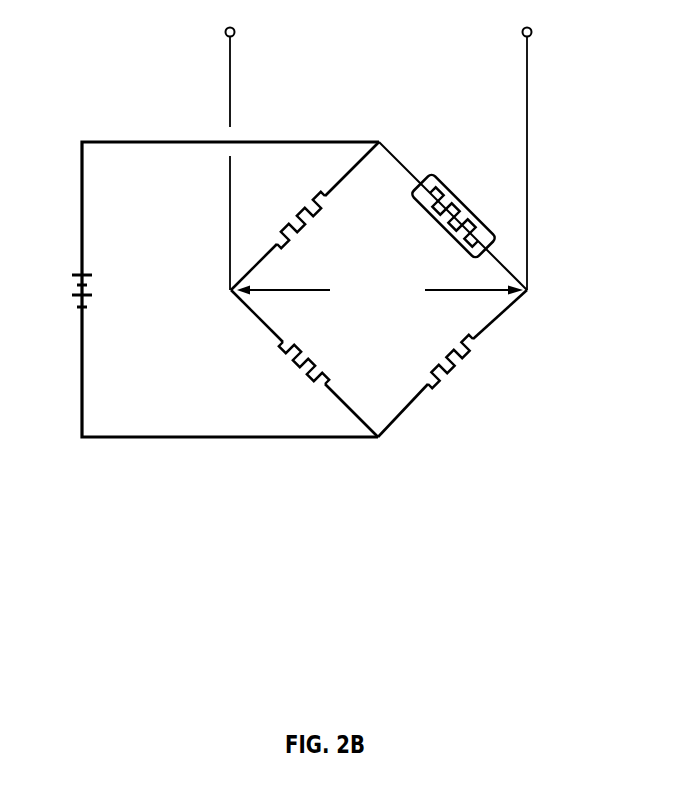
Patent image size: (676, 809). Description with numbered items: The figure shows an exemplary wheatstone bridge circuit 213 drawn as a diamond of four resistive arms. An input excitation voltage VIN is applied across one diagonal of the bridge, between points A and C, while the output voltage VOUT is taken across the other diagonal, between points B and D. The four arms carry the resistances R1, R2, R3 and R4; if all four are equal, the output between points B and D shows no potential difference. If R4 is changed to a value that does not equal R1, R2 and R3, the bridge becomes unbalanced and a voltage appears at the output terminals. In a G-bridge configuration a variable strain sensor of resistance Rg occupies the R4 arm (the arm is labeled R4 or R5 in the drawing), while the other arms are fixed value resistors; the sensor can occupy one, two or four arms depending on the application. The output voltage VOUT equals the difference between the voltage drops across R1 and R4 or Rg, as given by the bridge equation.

The wheatstone bridge circuit 213 is at (283, 330).
The resistance R1 is at (299, 217).
The resistance R2 is at (300, 369).
The resistance R3 is at (458, 365).
The resistance R4 is at (460, 208).
The sensing resistor (strain gauge) R5 is at (460, 208).
The input excitation voltage VIN is at (54, 289).
The output voltage VOUT is at (380, 290).